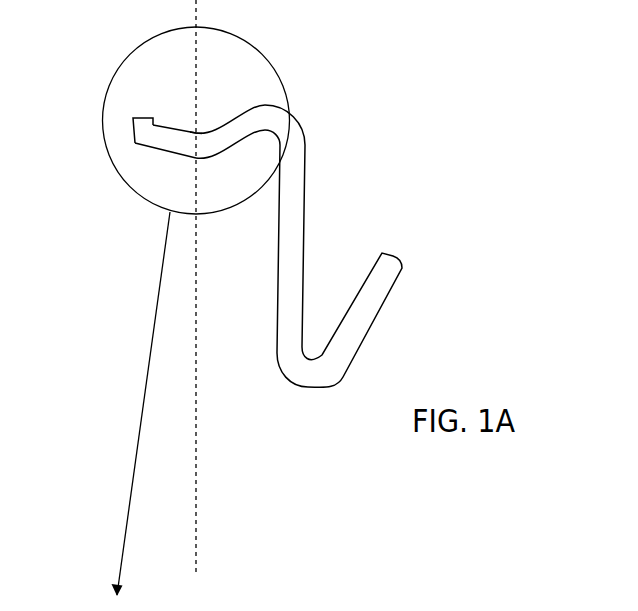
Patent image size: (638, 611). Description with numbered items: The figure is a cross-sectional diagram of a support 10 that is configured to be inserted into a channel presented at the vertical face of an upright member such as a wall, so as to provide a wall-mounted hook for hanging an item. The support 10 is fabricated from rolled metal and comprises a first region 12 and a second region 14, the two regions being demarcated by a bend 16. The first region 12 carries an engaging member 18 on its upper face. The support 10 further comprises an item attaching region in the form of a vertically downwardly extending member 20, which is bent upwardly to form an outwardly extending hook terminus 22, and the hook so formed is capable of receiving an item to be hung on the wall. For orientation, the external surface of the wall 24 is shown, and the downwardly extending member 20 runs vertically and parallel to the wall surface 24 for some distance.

The support 10 is at (324, 122).
The first region 12 is at (162, 152).
The second region 14 is at (230, 117).
The bend 16 is at (195, 135).
The engaging member 18 is at (134, 119).
The vertically downwardly extending member 20 is at (303, 233).
The hook terminus 22 is at (390, 293).
The wall surface 24 is at (196, 515).